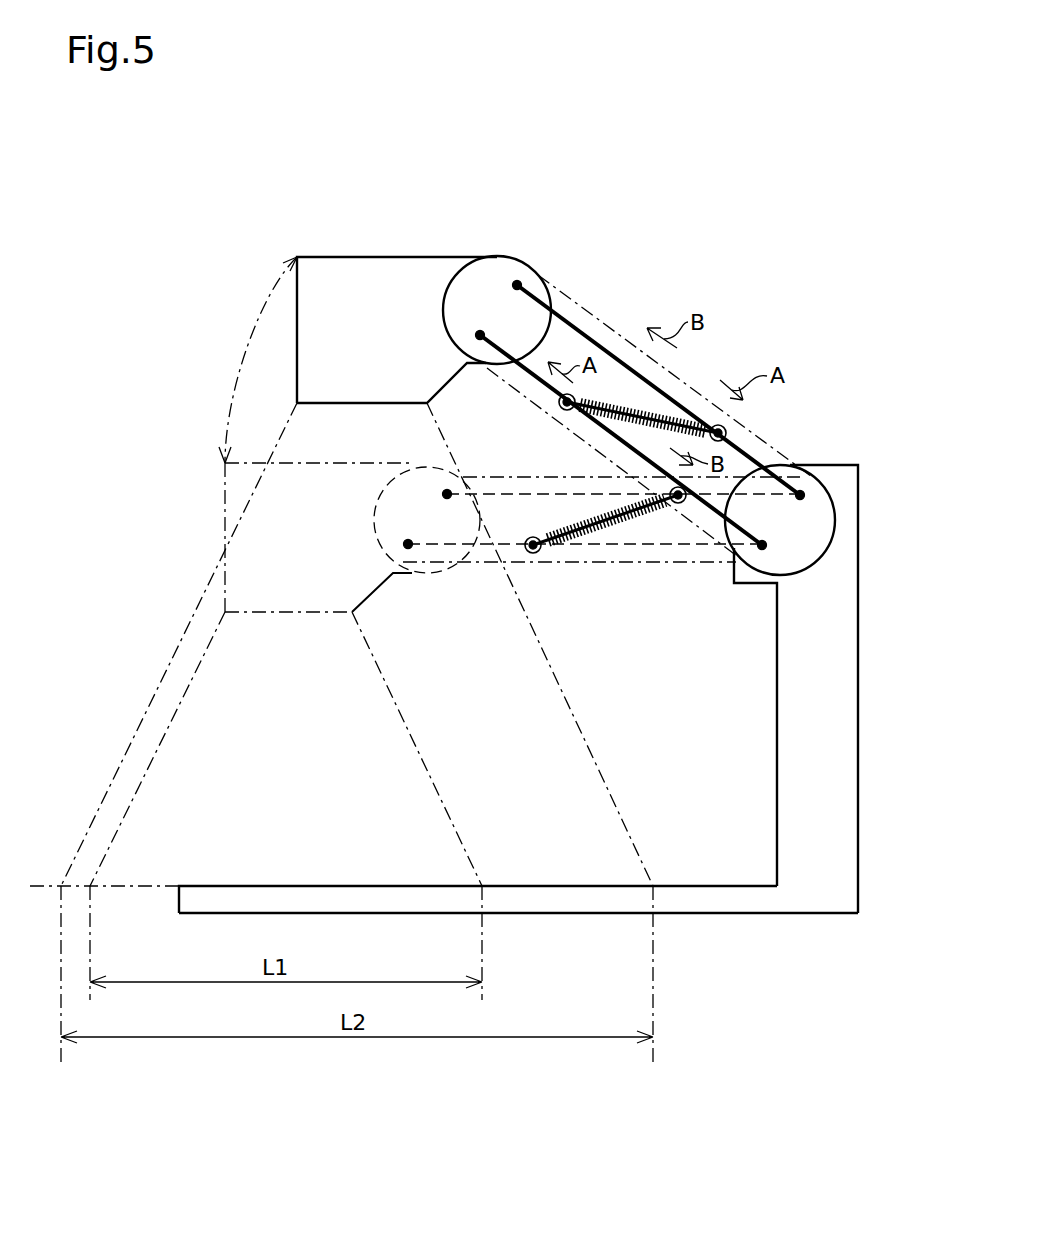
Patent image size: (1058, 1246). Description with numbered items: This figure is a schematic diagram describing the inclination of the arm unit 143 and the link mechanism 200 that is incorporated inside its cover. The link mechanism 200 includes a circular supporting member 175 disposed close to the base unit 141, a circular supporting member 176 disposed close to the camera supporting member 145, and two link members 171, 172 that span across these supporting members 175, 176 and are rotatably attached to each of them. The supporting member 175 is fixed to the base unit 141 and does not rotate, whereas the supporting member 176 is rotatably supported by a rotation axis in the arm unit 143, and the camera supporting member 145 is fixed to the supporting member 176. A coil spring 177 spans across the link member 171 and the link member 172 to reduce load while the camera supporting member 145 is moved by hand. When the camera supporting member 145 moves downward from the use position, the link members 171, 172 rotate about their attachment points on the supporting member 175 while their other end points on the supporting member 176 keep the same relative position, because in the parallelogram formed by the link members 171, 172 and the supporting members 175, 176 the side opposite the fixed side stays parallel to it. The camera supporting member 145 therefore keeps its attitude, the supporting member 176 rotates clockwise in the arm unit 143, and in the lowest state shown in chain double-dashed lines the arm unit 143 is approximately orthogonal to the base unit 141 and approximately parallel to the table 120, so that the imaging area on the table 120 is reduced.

The link mechanism 200 is at (715, 210).
The camera supporting member 145 is at (395, 257).
The circular supporting member 176 is at (512, 276).
The circular supporting member 175 is at (815, 507).
The arm unit 143 is at (692, 388).
The link member 171 is at (585, 330).
The link member 172 is at (528, 375).
The coil spring 177 is at (640, 420).
The base unit 141 is at (775, 770).
The table 120 is at (302, 886).